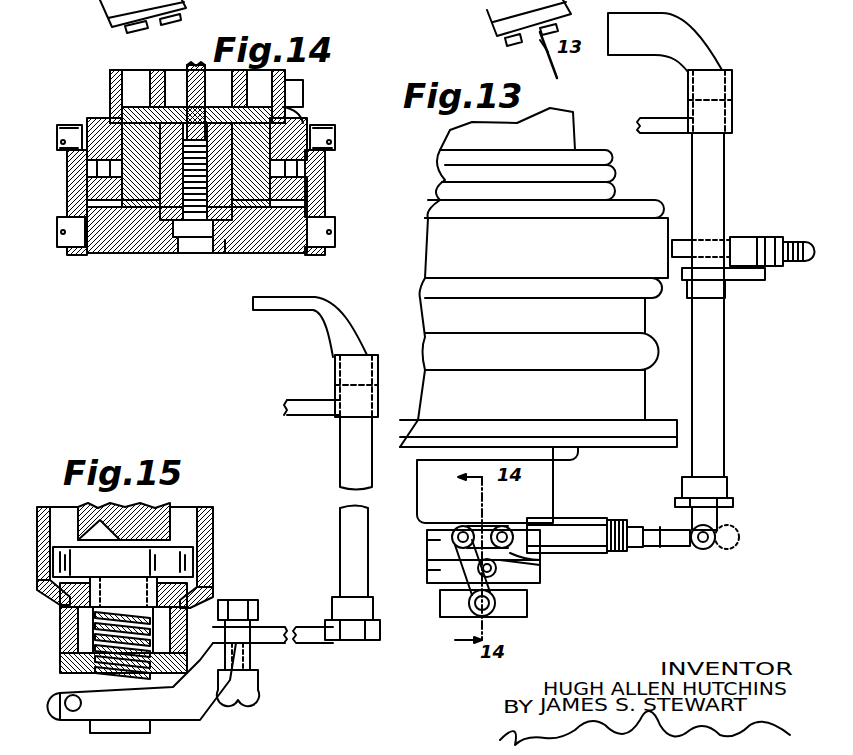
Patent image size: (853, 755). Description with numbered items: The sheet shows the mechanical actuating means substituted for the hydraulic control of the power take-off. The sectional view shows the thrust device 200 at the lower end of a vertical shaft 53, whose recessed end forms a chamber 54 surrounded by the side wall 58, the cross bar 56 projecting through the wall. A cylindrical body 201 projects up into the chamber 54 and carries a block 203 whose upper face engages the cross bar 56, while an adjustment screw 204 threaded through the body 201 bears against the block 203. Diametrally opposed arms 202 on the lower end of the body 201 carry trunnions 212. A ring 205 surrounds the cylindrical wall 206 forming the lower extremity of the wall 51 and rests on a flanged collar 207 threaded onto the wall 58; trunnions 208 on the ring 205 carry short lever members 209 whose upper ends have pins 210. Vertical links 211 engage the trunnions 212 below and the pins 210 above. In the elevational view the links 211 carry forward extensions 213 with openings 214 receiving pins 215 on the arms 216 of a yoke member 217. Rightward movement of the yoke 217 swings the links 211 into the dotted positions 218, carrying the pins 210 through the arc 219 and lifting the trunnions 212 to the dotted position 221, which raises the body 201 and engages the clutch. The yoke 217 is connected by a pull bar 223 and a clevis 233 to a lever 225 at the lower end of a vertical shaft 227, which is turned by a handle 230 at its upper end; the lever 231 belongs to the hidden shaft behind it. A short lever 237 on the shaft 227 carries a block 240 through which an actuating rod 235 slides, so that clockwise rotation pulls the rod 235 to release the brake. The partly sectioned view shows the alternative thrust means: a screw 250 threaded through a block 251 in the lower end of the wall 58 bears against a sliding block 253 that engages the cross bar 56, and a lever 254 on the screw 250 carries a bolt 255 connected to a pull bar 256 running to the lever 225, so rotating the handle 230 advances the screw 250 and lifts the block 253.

In FIG. 14, the wall 51 is at (275, 100).
In FIG. 14, the vertical shaft 53 is at (150, 77).
In FIG. 15, the vertical shaft 53 is at (170, 510).
In FIG. 14, the chamber 54 is at (215, 88).
In FIG. 15, the chamber 54 is at (157, 570).
In FIG. 14, the cross bar 56 is at (200, 70).
In FIG. 15, the cross bar 56 is at (110, 560).
In FIG. 14, the side wall 58 is at (140, 97).
In FIG. 15, the side wall 58 is at (180, 587).
In FIG. 14, the thrust device 200 is at (175, 195).
In FIG. 14, the cylindrical body 201 is at (215, 250).
In FIG. 13, the cylindrical body 201 is at (513, 607).
In FIG. 14, the arms 202 is at (105, 240).
In FIG. 14, the block 203 is at (268, 112).
In FIG. 14, the adjustment screw 204 is at (187, 253).
In FIG. 14, the ring 205 is at (100, 186).
In FIG. 14, the cylindrical wall 206 is at (95, 205).
In FIG. 14, the flanged collar 207 is at (135, 205).
In FIG. 13, the flanged collar 207 is at (512, 555).
In FIG. 14, the trunnions 208 is at (290, 170).
In FIG. 13, the trunnions 208 is at (537, 560).
In FIG. 14, the lever member 209 is at (300, 121).
In FIG. 13, the lever member 209 is at (537, 553).
In FIG. 14, the pins 210 is at (70, 135).
In FIG. 13, the pins 210 is at (516, 34).
In FIG. 14, the vertical links 211 is at (72, 164).
In FIG. 13, the vertical links 211 is at (490, 22).
In FIG. 14, the trunnions 212 is at (65, 240).
In FIG. 13, the trunnions 212 is at (453, 617).
In FIG. 13, the forward extensions 213 is at (470, 537).
In FIG. 13, the openings 214 is at (517, 533).
In FIG. 13, the pins 215 is at (612, 533).
In FIG. 13, the arms 216 is at (552, 550).
In FIG. 13, the yoke member 217 is at (590, 530).
In FIG. 13, the dotted line positions 218 is at (483, 523).
In FIG. 13, the arc 219 is at (475, 513).
In FIG. 13, the dotted lines 221 is at (457, 607).
In FIG. 13, the pull bar 223 is at (662, 550).
In FIG. 13, the lever 225 is at (727, 493).
In FIG. 15, the lever 225 is at (330, 622).
In FIG. 13, the vertical shaft 227 is at (705, 387).
In FIG. 13, the lever 230 is at (700, 43).
In FIG. 13, the lever 231 is at (620, 53).
In FIG. 13, the clevis 233 is at (712, 522).
In FIG. 13, the actuating rod 235 is at (682, 233).
In FIG. 13, the lever 237 is at (733, 273).
In FIG. 13, the block 240 is at (743, 243).
In FIG. 15, the screw 250 is at (80, 673).
In FIG. 15, the block 251 is at (100, 640).
In FIG. 15, the block 253 is at (100, 590).
In FIG. 15, the lever 254 is at (173, 697).
In FIG. 15, the bolt 255 is at (230, 613).
In FIG. 13, the pull bar 256 is at (303, 643).